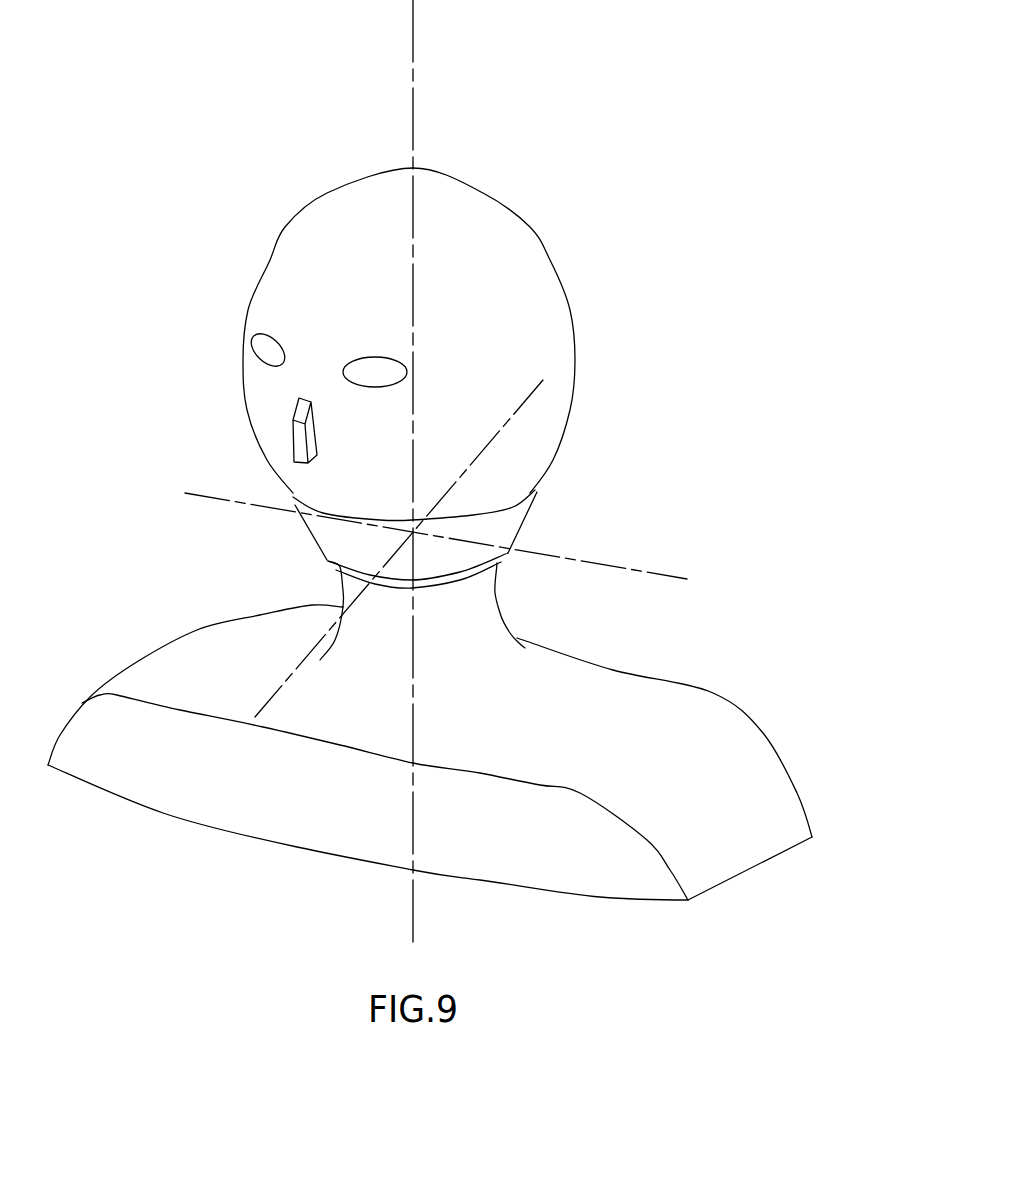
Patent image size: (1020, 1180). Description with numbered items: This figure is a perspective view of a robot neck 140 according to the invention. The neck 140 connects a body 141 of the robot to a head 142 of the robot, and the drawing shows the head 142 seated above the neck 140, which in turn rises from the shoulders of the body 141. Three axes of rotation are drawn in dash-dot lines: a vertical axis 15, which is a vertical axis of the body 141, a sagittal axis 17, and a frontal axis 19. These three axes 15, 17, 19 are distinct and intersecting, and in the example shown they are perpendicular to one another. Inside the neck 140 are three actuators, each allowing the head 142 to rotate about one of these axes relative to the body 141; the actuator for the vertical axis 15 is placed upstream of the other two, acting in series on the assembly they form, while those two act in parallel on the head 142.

The vertical axis 15 is at (413, 50).
The sagittal axis 17 is at (528, 397).
The frontal axis 19 is at (630, 570).
The neck 140 is at (670, 617).
The body 141 is at (800, 757).
The head 142 is at (594, 300).